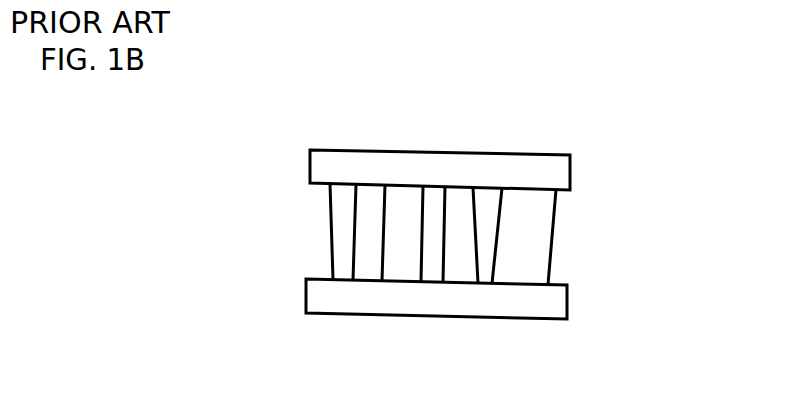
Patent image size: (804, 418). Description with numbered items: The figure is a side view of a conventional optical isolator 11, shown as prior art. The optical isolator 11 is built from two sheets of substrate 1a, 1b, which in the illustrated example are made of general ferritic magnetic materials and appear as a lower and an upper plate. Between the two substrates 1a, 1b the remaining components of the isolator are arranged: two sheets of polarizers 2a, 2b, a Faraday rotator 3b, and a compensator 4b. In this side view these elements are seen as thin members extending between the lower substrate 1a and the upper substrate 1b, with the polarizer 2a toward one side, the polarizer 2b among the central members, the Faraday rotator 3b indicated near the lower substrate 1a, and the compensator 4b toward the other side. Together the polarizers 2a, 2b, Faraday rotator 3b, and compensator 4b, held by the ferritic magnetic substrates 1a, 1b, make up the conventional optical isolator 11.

The optical isolator 11 is at (472, 240).
The substrate 1a is at (548, 300).
The substrate 1b is at (562, 170).
The polarizer 2a is at (347, 237).
The polarizer 2b is at (456, 202).
The Faraday rotator 3b is at (403, 268).
The compensator 4b is at (535, 244).